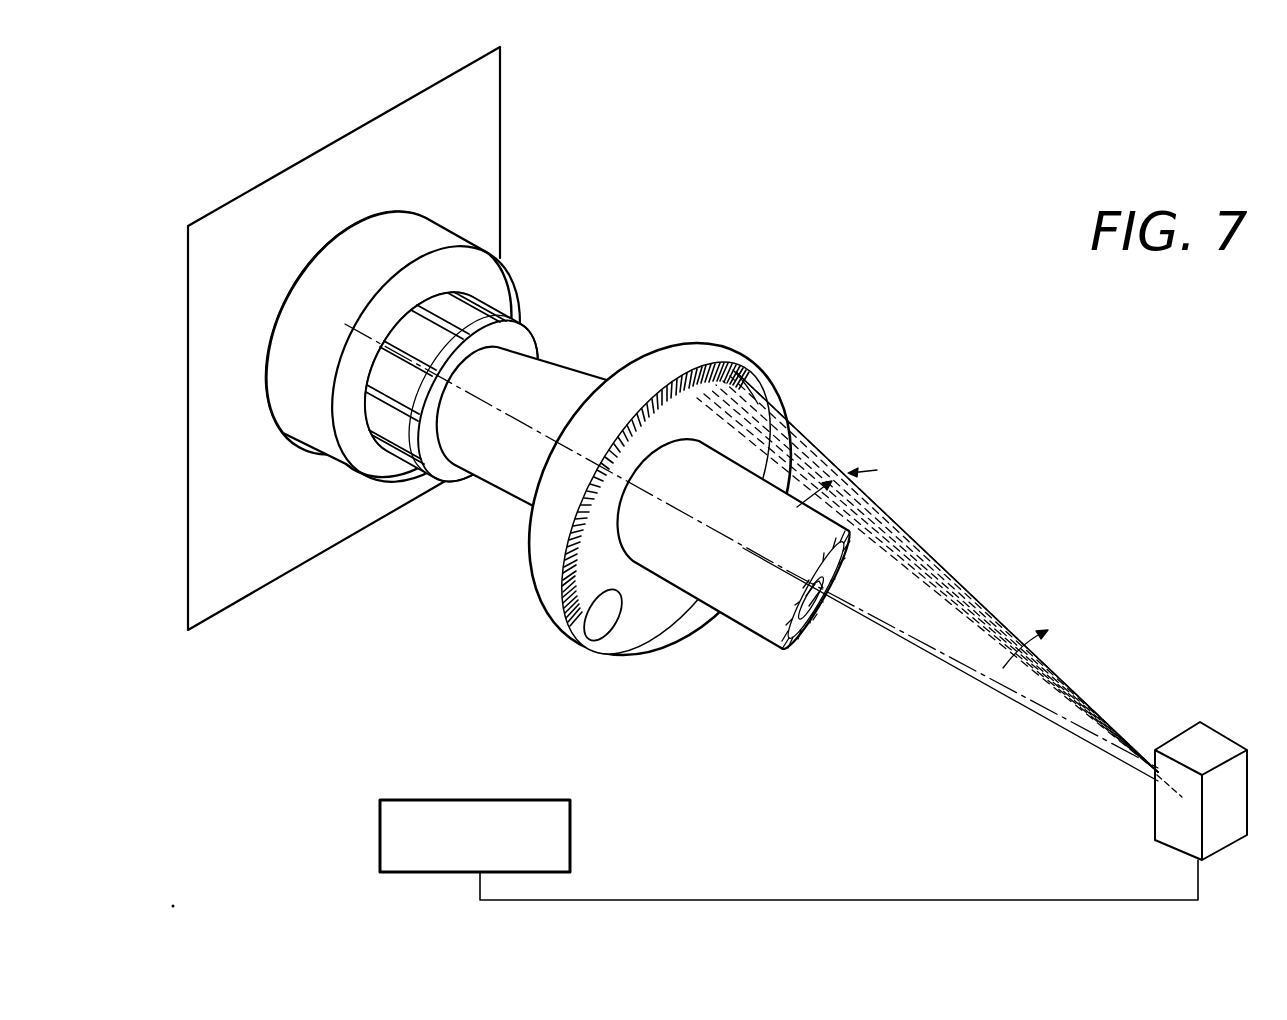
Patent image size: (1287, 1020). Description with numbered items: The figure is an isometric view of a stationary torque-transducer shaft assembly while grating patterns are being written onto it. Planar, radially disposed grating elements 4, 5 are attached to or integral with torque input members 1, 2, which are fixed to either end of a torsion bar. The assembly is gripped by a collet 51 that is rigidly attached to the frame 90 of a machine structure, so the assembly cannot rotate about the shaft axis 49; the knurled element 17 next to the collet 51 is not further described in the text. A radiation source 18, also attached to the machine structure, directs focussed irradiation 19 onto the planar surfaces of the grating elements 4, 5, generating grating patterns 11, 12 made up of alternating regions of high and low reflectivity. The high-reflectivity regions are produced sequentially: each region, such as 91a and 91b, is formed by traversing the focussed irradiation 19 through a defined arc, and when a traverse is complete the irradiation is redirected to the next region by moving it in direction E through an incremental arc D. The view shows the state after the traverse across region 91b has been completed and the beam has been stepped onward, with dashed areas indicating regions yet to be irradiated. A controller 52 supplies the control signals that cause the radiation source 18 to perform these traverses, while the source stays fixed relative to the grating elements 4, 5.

The mounting plate 90 is at (488, 133).
The collet 51 is at (445, 243).
The knurled clamping nut 17 is at (475, 318).
The torque input member 2 is at (507, 480).
The grating pattern 12 is at (563, 603).
The grating element 5 is at (595, 635).
The region of high reflectivity 91a is at (727, 353).
The region of high reflectivity 91b is at (733, 370).
The grating pattern 11 is at (608, 622).
The grating element 4 is at (660, 618).
The torque input member 1 is at (760, 597).
The focussed irradiation 19 is at (808, 455).
The incremental arc D is at (851, 485).
The direction of irradiation movement E is at (1035, 649).
The shaft axis 49 is at (972, 673).
The radiation source 18 is at (1168, 813).
The controller 52 is at (555, 847).